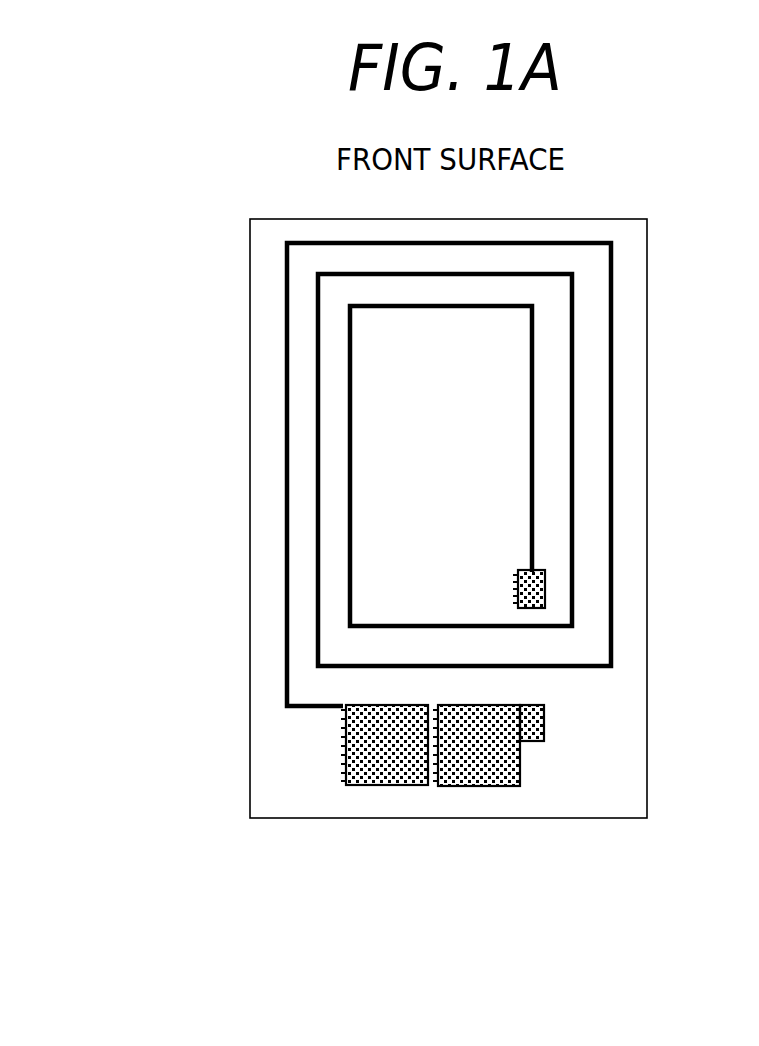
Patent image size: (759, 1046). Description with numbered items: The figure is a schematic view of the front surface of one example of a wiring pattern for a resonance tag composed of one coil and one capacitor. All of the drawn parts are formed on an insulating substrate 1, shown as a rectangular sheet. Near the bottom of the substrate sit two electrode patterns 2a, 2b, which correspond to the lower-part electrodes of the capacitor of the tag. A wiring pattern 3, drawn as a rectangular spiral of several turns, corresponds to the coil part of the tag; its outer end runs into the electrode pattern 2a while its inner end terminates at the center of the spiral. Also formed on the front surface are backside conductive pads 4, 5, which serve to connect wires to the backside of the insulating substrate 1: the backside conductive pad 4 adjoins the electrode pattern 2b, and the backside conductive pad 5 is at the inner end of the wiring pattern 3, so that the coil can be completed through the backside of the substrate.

The insulating substrate 1 is at (276, 767).
The electrode pattern 2a is at (386, 778).
The electrode pattern 2b is at (488, 778).
The wiring pattern 3 is at (288, 380).
The backside conductive pad 4 is at (545, 723).
The backside conductive pad 5 is at (545, 590).